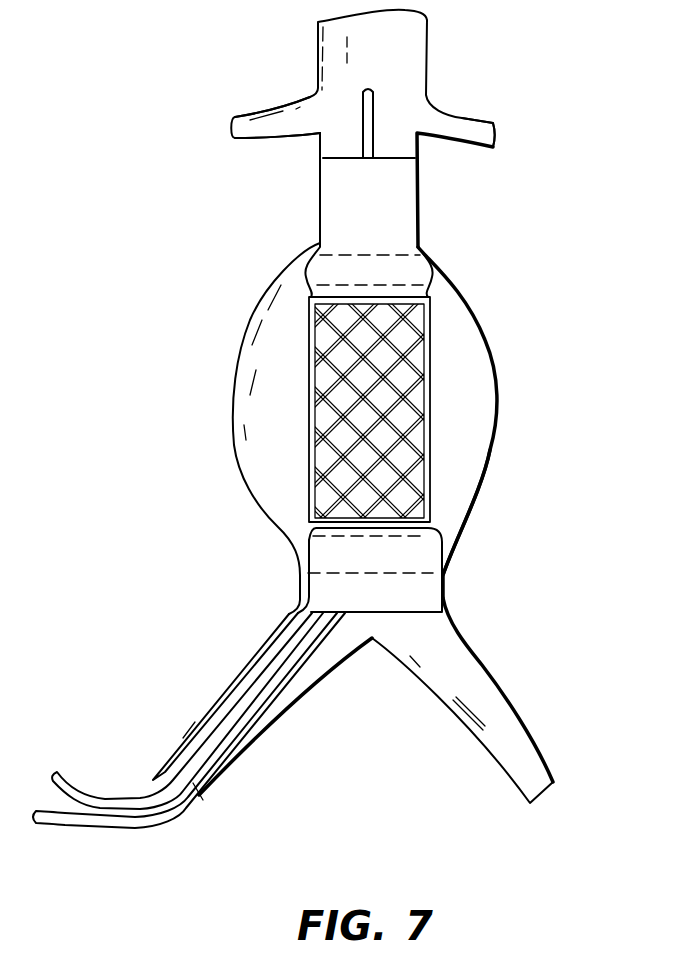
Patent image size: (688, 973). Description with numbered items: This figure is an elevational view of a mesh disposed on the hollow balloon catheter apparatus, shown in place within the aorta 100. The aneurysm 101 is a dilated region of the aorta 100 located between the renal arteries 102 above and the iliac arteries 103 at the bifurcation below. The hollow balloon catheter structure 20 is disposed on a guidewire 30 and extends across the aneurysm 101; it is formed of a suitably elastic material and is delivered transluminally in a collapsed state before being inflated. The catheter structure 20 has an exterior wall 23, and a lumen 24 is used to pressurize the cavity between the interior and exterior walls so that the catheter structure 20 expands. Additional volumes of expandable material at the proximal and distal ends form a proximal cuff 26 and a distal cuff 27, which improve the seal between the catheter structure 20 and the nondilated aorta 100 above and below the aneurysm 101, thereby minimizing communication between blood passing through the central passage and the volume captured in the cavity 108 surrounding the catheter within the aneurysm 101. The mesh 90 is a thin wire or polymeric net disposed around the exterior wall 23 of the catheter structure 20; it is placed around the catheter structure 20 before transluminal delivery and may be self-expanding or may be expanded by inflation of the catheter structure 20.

The aorta 100 is at (428, 55).
The renal arteries 102 is at (240, 115).
The guidewire 30 is at (374, 100).
The hollow balloon catheter structure 20 is at (400, 192).
The cuff 26 is at (433, 278).
The mesh 90 is at (430, 356).
The aneurysm 101 is at (500, 404).
The cavity 108 is at (475, 470).
The exterior wall 23 is at (303, 540).
The cuff 27 is at (437, 537).
The iliac arteries 103 is at (283, 700).
The lumen 24 is at (80, 790).